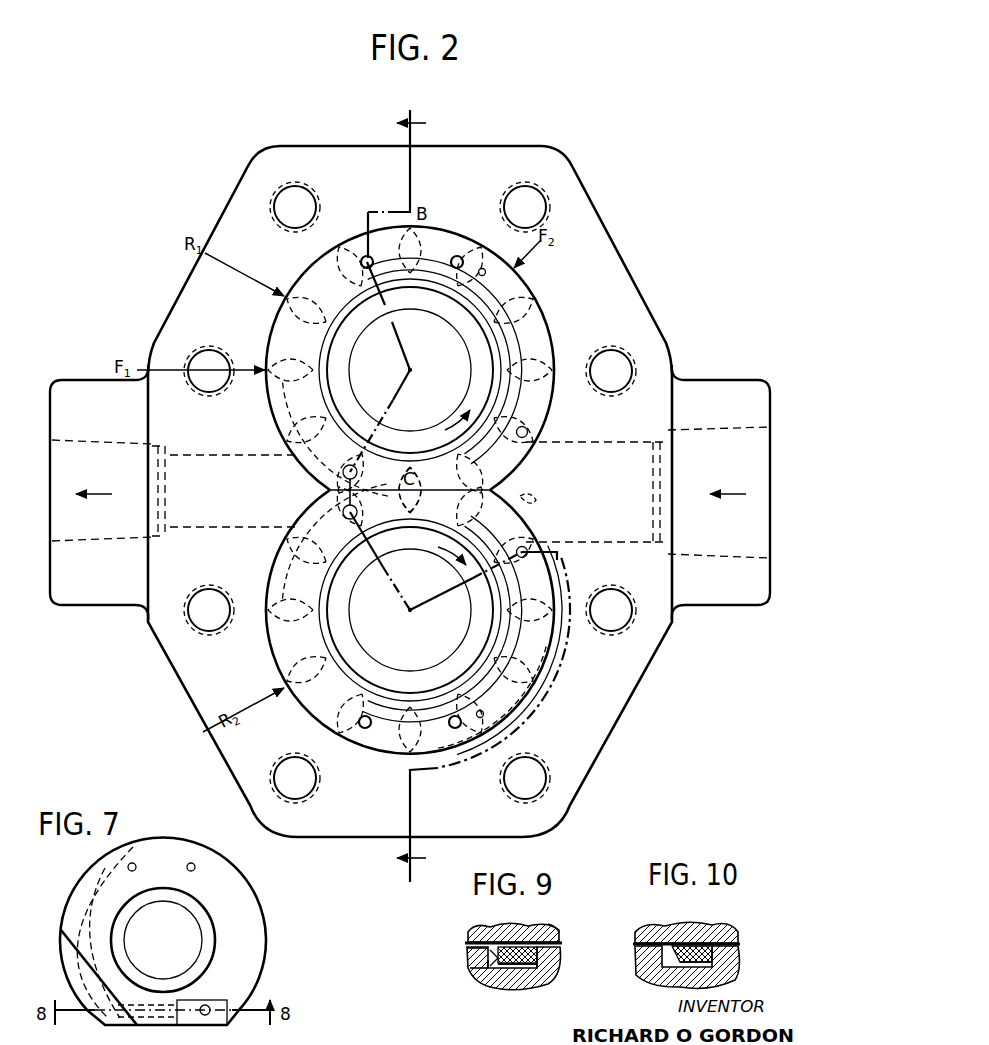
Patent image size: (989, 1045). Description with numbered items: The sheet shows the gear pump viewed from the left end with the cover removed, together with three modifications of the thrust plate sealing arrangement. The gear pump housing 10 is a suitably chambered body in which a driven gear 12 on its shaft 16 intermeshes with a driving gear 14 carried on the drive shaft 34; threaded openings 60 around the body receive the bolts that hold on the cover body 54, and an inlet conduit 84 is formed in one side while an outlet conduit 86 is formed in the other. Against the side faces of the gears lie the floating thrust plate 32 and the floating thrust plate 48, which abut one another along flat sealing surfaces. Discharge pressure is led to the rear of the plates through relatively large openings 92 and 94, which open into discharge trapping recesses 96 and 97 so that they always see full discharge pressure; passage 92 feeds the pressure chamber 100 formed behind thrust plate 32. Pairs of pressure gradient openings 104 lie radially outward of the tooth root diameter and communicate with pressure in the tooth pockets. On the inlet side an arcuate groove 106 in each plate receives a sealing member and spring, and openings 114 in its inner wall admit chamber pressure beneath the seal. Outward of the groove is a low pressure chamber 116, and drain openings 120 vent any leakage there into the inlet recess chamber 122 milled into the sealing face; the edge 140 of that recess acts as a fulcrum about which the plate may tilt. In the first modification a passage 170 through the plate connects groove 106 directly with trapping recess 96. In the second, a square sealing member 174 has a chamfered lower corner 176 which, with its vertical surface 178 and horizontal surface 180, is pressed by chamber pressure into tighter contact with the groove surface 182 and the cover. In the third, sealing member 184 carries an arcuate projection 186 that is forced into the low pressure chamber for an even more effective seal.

In FIG. 2, the gear pump housing 10 is at (624, 742).
In FIG. 2, the driven gear 12 is at (536, 310).
In FIG. 2, the driving gear 14 is at (532, 722).
In FIG. 2, the shaft 16 is at (446, 380).
In FIG. 2, the floating thrust plate 32 is at (522, 284).
In FIG. 7, the floating thrust plate 32 is at (252, 935).
In FIG. 9, the floating thrust plate 32 is at (470, 962).
In FIG. 10, the floating thrust plate 32 is at (648, 975).
In FIG. 2, the drive shaft 34 is at (420, 641).
In FIG. 2, the floating thrust plate 48 is at (538, 672).
In FIG. 9, the cover body 54 is at (476, 928).
In FIG. 10, the cover body 54 is at (655, 926).
In FIG. 2, the threaded openings 60 is at (276, 197).
In FIG. 2, the inlet conduit 84 is at (708, 450).
In FIG. 2, the outlet conduit 86 is at (80, 455).
In FIG. 2, the discharge pressure opening 92 is at (342, 472).
In FIG. 7, the discharge pressure opening 92 is at (210, 1006).
In FIG. 2, the discharge pressure opening 94 is at (342, 512).
In FIG. 2, the discharge trapping recess 96 is at (292, 443).
In FIG. 7, the discharge trapping recess 96 is at (232, 1000).
In FIG. 2, the discharge trapping recess 97 is at (292, 548).
In FIG. 9, the pressure chamber 100 is at (470, 942).
In FIG. 10, the pressure chamber 100 is at (648, 942).
In FIG. 2, the pressure gradient openings 104 is at (364, 256).
In FIG. 7, the pressure gradient openings 104 is at (190, 862).
In FIG. 7, the arcuate groove 106 is at (83, 896).
In FIG. 9, the arcuate groove 106 is at (478, 975).
In FIG. 9, the openings 114 is at (486, 951).
In FIG. 9, the low pressure chamber 116 is at (552, 928).
In FIG. 10, the low pressure chamber 116 is at (730, 940).
In FIG. 2, the drain openings 120 is at (528, 430).
In FIG. 2, the inlet recess chamber 122 is at (536, 503).
In FIG. 7, the inlet recess chamber 122 is at (72, 982).
In FIG. 7, the edge 140 is at (62, 933).
In FIG. 7, the passage 170 is at (154, 1008).
In FIG. 9, the sealing member 174 is at (517, 968).
In FIG. 9, the chamfered lower corner 176 is at (494, 968).
In FIG. 9, the vertical surface 178 is at (486, 966).
In FIG. 9, the horizontal surface 180 is at (536, 970).
In FIG. 9, the groove surface 182 is at (540, 952).
In FIG. 10, the sealing member 184 is at (712, 958).
In FIG. 10, the arcuate projection 186 is at (718, 940).